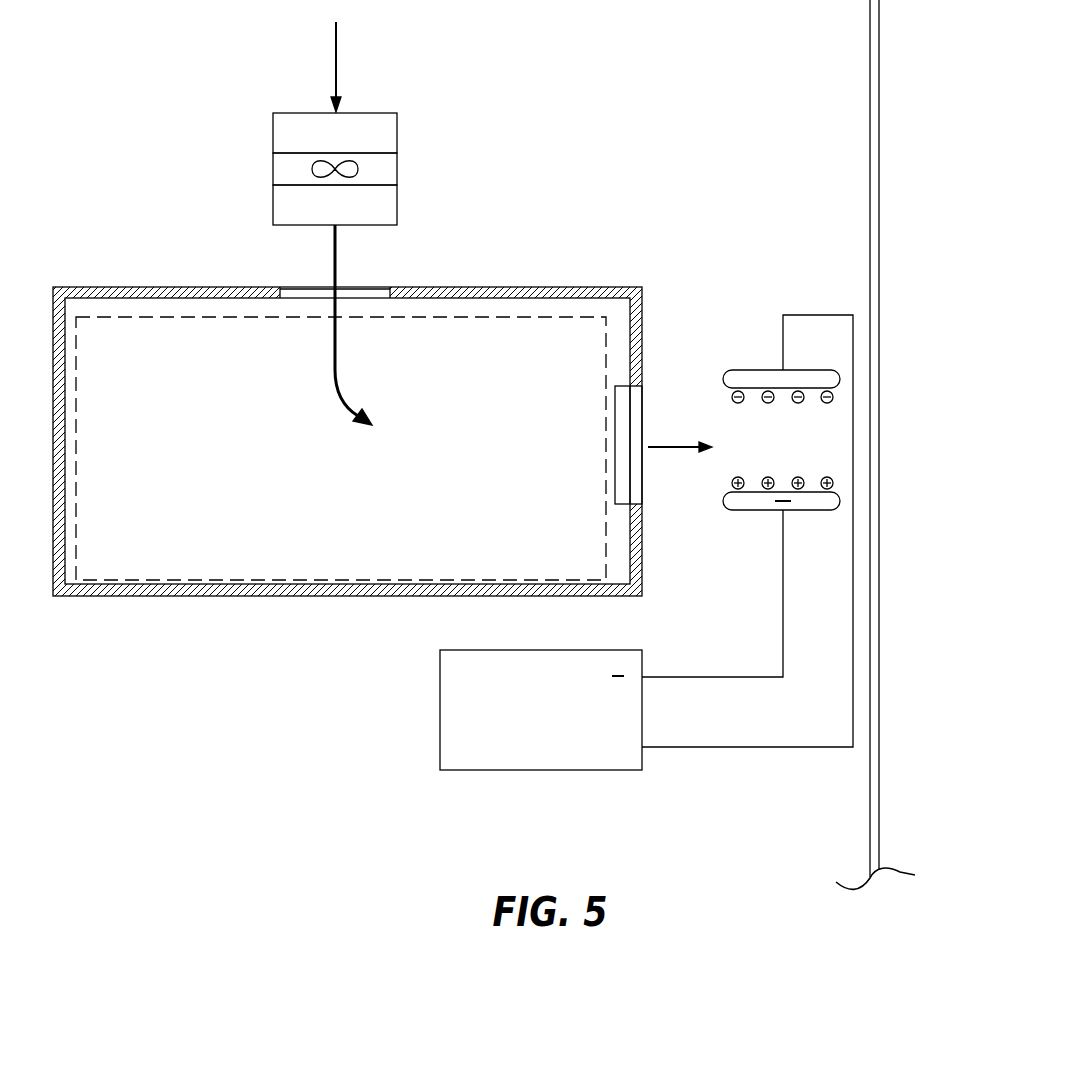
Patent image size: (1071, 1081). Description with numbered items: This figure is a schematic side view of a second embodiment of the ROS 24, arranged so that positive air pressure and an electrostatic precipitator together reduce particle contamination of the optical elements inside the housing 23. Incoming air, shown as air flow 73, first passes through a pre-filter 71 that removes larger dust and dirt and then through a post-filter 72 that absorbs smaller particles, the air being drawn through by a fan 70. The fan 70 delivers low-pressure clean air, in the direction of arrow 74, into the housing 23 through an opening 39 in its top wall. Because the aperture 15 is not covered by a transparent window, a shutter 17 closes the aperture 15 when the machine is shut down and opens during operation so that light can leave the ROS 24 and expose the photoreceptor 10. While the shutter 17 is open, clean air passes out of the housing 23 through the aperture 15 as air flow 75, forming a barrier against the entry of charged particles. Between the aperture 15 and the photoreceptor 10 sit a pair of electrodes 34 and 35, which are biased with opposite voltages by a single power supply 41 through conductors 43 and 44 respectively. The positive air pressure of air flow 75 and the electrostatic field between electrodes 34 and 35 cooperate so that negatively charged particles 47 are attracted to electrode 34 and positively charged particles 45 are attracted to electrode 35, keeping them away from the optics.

The photoreceptor 10 is at (870, 60).
The aperture 15 is at (638, 425).
The shutter 17 is at (624, 483).
The housing 23 is at (222, 287).
The ROS 24 is at (520, 310).
The electrode 34 is at (750, 370).
The electrode 35 is at (750, 510).
The opening 39 is at (305, 300).
The power supply 41 is at (440, 710).
The conductor 43 is at (855, 630).
The conductor 44 is at (783, 630).
The positively charged particles 45 is at (738, 477).
The negatively charged particles 47 is at (739, 404).
The fan 70 is at (398, 167).
The pre-filter 71 is at (398, 131).
The post-filter 72 is at (398, 205).
The air flow 73 is at (334, 62).
The arrow 74 is at (338, 380).
The air flow 75 is at (683, 440).